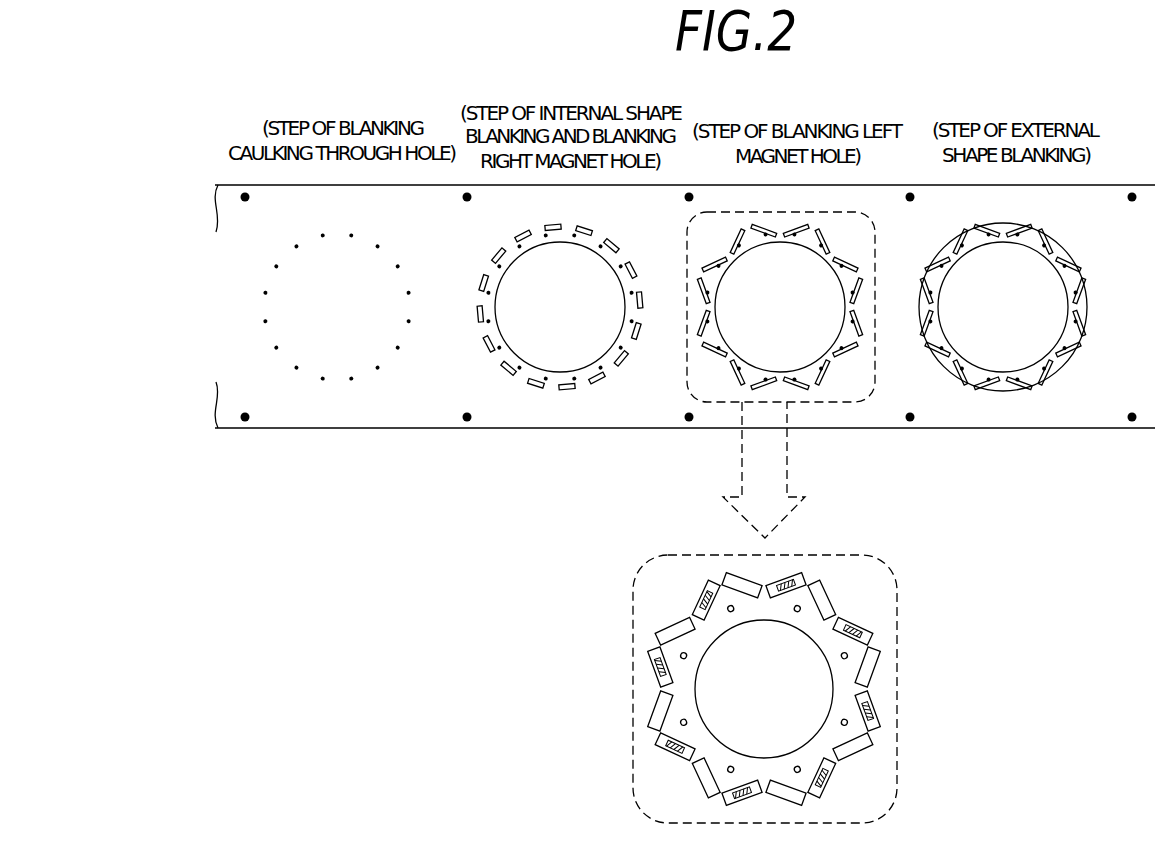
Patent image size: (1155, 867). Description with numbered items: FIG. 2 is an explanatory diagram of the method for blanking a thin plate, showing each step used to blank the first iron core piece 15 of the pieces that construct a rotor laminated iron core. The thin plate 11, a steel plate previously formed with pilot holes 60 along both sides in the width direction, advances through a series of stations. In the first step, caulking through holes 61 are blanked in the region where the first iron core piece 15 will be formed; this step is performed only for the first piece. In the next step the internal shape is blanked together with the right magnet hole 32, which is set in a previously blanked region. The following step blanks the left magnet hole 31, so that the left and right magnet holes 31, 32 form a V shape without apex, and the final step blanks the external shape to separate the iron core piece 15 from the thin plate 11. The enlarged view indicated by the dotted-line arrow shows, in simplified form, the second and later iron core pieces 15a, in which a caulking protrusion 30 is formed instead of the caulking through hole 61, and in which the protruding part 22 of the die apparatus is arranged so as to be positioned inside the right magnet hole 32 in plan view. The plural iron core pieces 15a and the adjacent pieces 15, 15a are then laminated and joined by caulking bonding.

The thin plate 11 is at (302, 410).
The iron core piece 15 is at (820, 392).
The iron core piece 15a is at (868, 597).
The protruding part 22 is at (713, 595).
The caulking protrusion 30 is at (680, 650).
The left magnet hole 31 is at (737, 583).
The right magnet hole 32 is at (522, 382).
The pilot hole 60 is at (243, 196).
The caulking through hole 61 is at (352, 381).